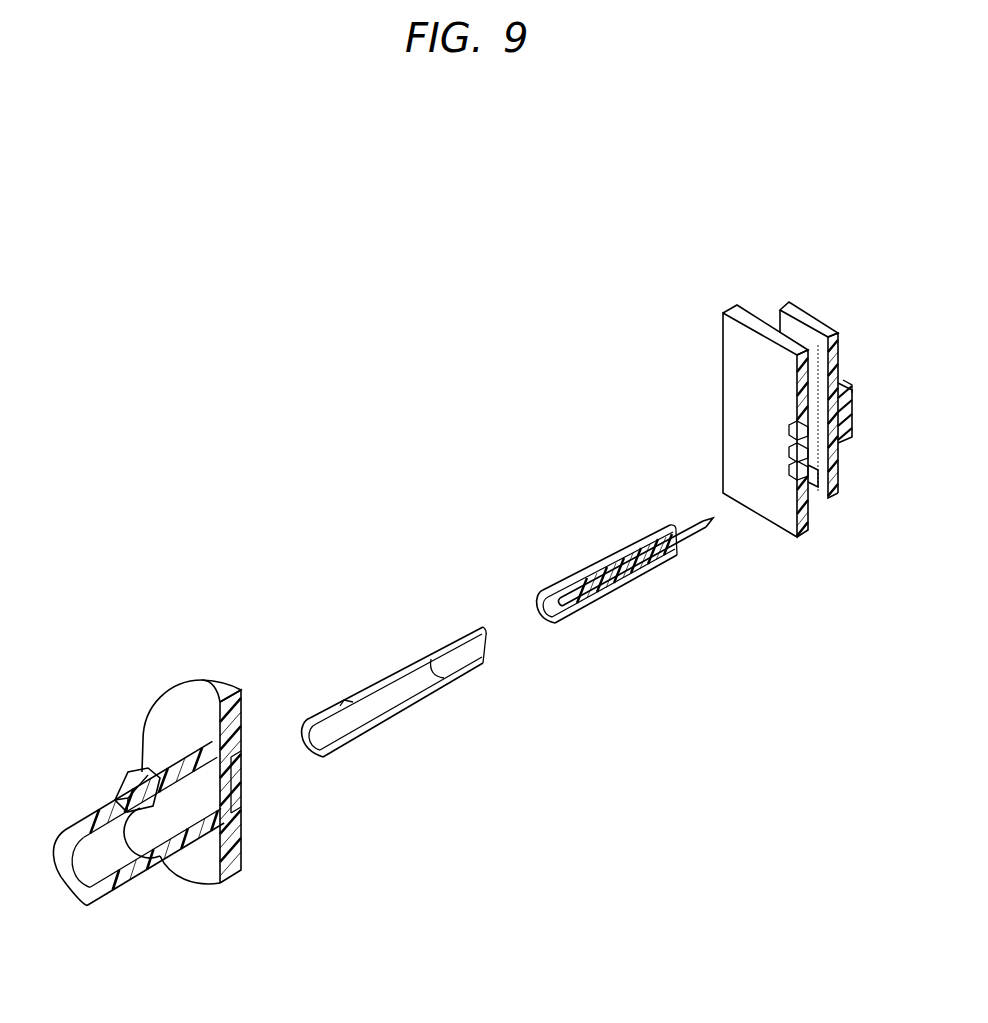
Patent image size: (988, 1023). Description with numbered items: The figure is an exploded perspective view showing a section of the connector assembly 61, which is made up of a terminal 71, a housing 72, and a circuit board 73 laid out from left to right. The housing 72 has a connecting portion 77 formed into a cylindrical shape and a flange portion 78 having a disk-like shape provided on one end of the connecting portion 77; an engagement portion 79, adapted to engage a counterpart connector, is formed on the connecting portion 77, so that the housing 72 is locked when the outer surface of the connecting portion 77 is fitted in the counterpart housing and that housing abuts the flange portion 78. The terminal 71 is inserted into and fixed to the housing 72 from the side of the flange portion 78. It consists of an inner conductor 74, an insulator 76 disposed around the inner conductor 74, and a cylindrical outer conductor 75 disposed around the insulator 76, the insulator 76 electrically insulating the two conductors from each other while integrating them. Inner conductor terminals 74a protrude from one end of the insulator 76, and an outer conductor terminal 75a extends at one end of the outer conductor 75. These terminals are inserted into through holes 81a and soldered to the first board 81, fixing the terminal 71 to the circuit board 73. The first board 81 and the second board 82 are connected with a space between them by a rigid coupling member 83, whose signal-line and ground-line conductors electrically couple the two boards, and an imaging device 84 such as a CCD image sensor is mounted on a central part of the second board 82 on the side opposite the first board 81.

The connector assembly 61 is at (346, 524).
The terminal 71 is at (437, 448).
The housing 72 is at (178, 678).
The circuit board 73 is at (722, 200).
The inner conductor 74 is at (420, 660).
The inner conductor terminal 74a is at (483, 640).
The outer conductor 75 is at (655, 540).
The outer conductor terminal 75a is at (703, 530).
The insulator 76 is at (578, 590).
The connecting portion 77 is at (143, 876).
The flange portion 78 is at (212, 882).
The engagement portion 79 is at (128, 778).
The first board 81 is at (737, 305).
The through holes 81a is at (797, 455).
The second board 82 is at (788, 302).
The coupling member 83 is at (815, 489).
The imaging device 84 is at (850, 400).